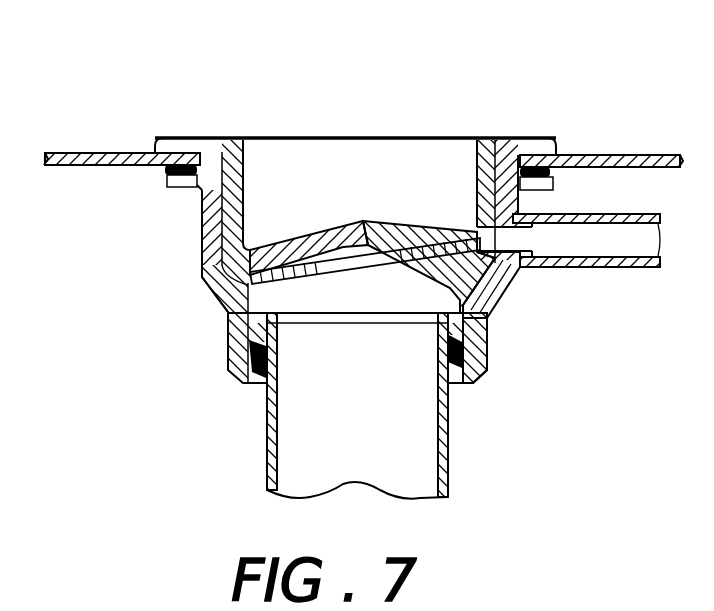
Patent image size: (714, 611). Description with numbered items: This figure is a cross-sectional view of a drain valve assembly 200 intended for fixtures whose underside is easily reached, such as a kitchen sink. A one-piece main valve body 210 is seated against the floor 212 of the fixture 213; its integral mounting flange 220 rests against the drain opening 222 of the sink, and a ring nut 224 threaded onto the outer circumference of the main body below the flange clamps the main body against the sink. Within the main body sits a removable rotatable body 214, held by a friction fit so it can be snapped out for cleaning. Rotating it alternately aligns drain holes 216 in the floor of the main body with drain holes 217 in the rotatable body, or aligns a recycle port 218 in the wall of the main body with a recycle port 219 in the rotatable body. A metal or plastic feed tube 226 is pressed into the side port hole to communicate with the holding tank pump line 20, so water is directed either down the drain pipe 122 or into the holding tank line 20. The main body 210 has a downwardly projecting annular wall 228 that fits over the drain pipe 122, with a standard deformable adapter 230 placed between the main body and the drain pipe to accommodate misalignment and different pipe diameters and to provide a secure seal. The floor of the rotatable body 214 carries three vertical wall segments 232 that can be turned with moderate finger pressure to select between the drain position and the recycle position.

The holding tank pump line 20 is at (637, 270).
The drain pipe 122 is at (449, 450).
The drain valve assembly 200 is at (156, 374).
The main valve body 210 is at (203, 271).
The floor of the fixture 212 is at (50, 153).
The fixture 213 is at (105, 151).
The rotatable body 214 is at (432, 136).
The drain holes 216 is at (265, 298).
The drain holes 217 is at (413, 232).
The recycle port 218 is at (498, 240).
The recycle port 219 is at (484, 240).
The mounting flange 220 is at (160, 143).
The drain opening 222 is at (165, 172).
The ring nut 224 is at (170, 189).
The feed tube 226 is at (516, 266).
The annular wall 228 is at (486, 356).
The deformable adapter 230 is at (253, 382).
The vertical wall segments 232 is at (304, 158).